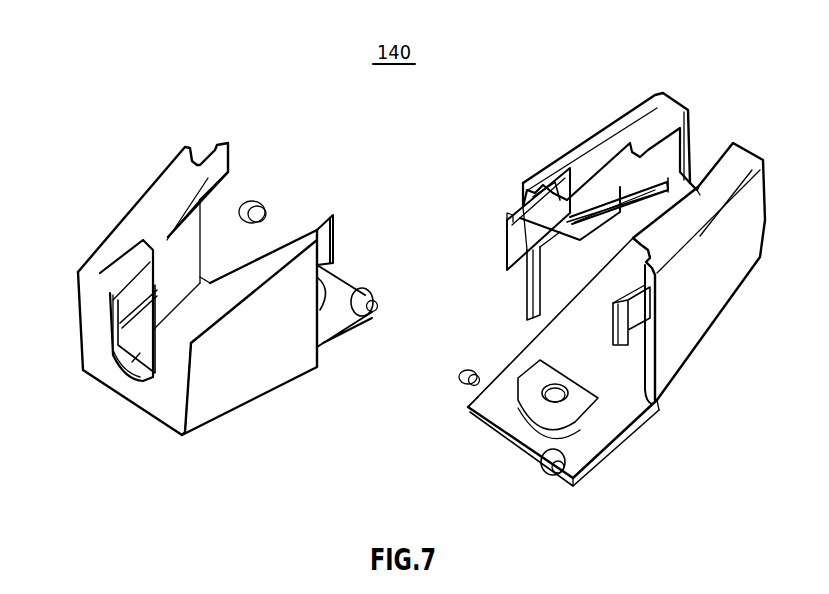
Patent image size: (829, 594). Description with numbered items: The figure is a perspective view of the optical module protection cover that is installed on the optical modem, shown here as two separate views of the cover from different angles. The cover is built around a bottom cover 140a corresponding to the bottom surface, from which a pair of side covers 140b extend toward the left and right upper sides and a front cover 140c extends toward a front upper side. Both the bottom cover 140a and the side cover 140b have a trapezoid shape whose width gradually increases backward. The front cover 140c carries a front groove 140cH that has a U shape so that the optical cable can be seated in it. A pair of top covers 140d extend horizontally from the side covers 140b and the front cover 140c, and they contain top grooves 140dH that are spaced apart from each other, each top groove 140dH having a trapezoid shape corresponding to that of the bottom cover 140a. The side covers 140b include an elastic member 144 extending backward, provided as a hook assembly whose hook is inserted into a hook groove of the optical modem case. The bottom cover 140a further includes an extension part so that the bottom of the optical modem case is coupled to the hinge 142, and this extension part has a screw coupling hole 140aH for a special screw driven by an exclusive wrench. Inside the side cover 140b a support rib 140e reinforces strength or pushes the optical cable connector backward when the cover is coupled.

The bottom cover 140a is at (620, 397).
The screw coupling hole 140aH is at (547, 400).
The side cover 140b is at (265, 363).
The front cover 140c is at (167, 403).
The front groove 140cH is at (140, 353).
The top cover 140d is at (118, 252).
The top groove 140dH is at (228, 214).
The support rib 140e is at (137, 313).
The hinge 142 is at (372, 315).
The elastic member 144 is at (510, 220).